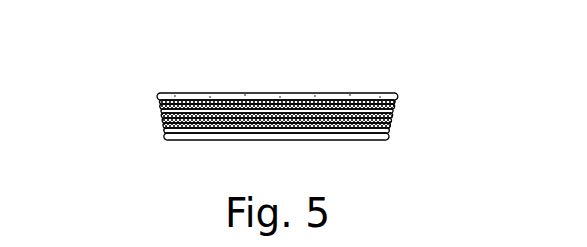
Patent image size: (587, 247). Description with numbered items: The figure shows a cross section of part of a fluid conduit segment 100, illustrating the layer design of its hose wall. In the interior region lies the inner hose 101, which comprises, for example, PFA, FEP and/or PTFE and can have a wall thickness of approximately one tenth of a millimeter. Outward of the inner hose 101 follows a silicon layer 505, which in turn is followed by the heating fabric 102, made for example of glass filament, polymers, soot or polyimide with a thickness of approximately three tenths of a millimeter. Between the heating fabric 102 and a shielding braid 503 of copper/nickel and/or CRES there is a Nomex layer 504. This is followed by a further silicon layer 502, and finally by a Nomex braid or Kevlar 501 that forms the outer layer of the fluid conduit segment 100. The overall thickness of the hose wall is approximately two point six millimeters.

The fluid conduit segment 100 is at (377, 49).
The inner hose 101 is at (397, 95).
The heating fabric 102 is at (393, 111).
The Nomex braid or Kevlar 501 is at (170, 137).
The silicon layer 502 is at (388, 134).
The shielding braid 503 is at (165, 123).
The Nomex layer 504 is at (160, 105).
The silicon layer 505 is at (160, 96).